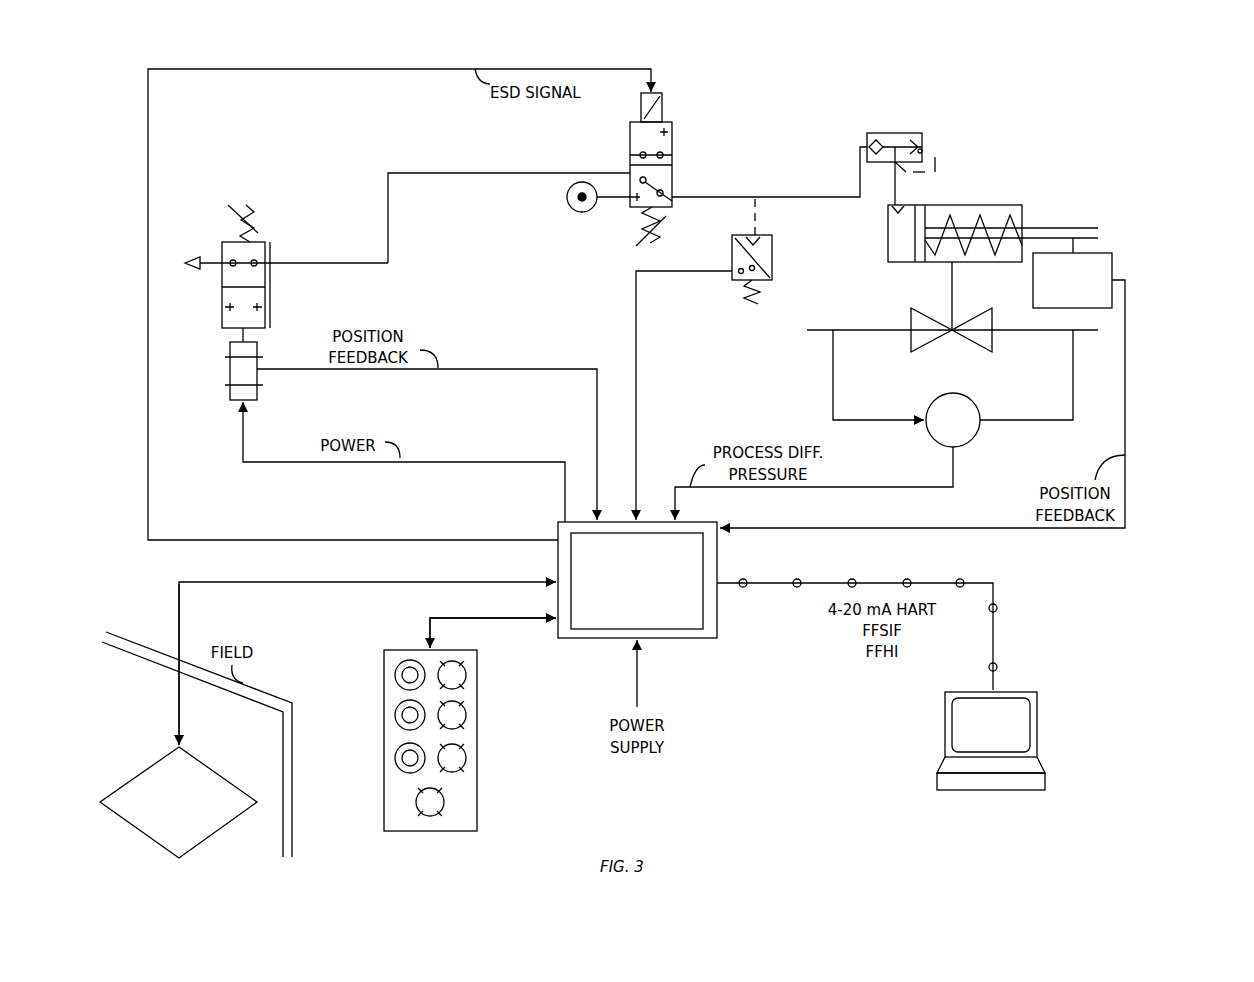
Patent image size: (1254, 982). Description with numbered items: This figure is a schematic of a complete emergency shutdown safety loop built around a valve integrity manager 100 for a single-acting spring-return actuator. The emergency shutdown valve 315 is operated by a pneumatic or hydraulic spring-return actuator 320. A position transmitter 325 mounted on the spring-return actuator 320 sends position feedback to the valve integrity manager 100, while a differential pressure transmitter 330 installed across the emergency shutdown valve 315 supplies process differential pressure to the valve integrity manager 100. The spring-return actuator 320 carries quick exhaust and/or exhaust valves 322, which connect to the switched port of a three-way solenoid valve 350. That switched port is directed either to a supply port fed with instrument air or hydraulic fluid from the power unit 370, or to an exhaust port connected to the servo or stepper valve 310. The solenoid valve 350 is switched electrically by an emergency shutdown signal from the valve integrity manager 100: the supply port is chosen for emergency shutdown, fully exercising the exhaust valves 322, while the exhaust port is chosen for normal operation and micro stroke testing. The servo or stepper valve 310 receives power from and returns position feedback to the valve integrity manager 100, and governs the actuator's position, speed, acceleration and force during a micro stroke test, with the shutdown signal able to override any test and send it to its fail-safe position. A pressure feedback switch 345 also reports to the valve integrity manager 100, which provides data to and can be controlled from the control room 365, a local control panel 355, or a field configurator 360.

The valve integrity manager 100 is at (717, 625).
The servo or stepper valve 310 is at (262, 243).
The emergency shutdown valve 315 is at (1028, 368).
The spring-return actuator 320 is at (968, 205).
The quick exhaust and/or exhaust valves 322 is at (893, 133).
The position transmitter 325 is at (1112, 262).
The differential pressure transmitter 330 is at (975, 437).
The pressure feedback switch 345 is at (640, 414).
The three-way solenoid valve 350 is at (630, 124).
The local control panel 355 is at (477, 735).
The field configurator 360 is at (997, 768).
The control room 365 is at (208, 762).
The power unit 370 is at (586, 212).